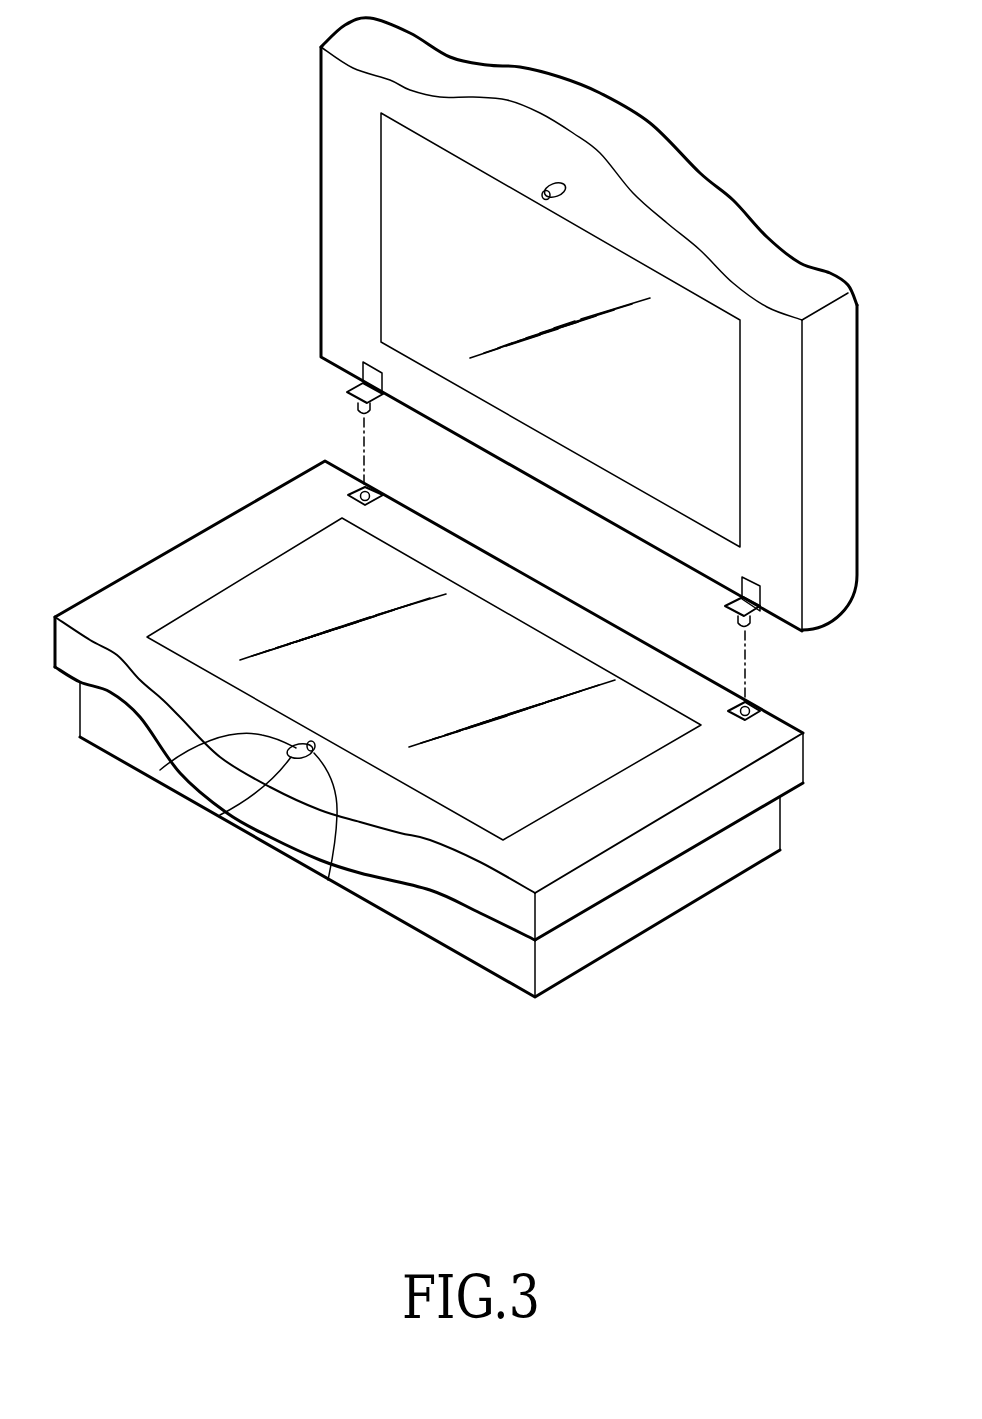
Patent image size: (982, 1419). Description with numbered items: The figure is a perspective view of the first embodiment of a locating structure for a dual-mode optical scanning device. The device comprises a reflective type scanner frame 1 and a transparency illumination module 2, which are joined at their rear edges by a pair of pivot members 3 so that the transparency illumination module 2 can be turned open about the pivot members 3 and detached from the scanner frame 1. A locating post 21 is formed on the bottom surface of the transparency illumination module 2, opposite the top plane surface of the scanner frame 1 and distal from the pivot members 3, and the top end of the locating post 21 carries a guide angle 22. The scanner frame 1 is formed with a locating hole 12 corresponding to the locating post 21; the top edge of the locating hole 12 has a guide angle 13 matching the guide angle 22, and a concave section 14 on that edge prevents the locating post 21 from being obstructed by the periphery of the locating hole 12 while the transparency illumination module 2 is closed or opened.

The reflective type scanner frame 1 is at (147, 583).
The transparency illumination module 2 is at (715, 225).
The pivot members 3 is at (300, 372).
The locating hole 12 is at (220, 815).
The guide angle 13 is at (328, 880).
The concave section 14 is at (160, 770).
The locating post 21 is at (566, 184).
The guide angle 22 is at (541, 186).